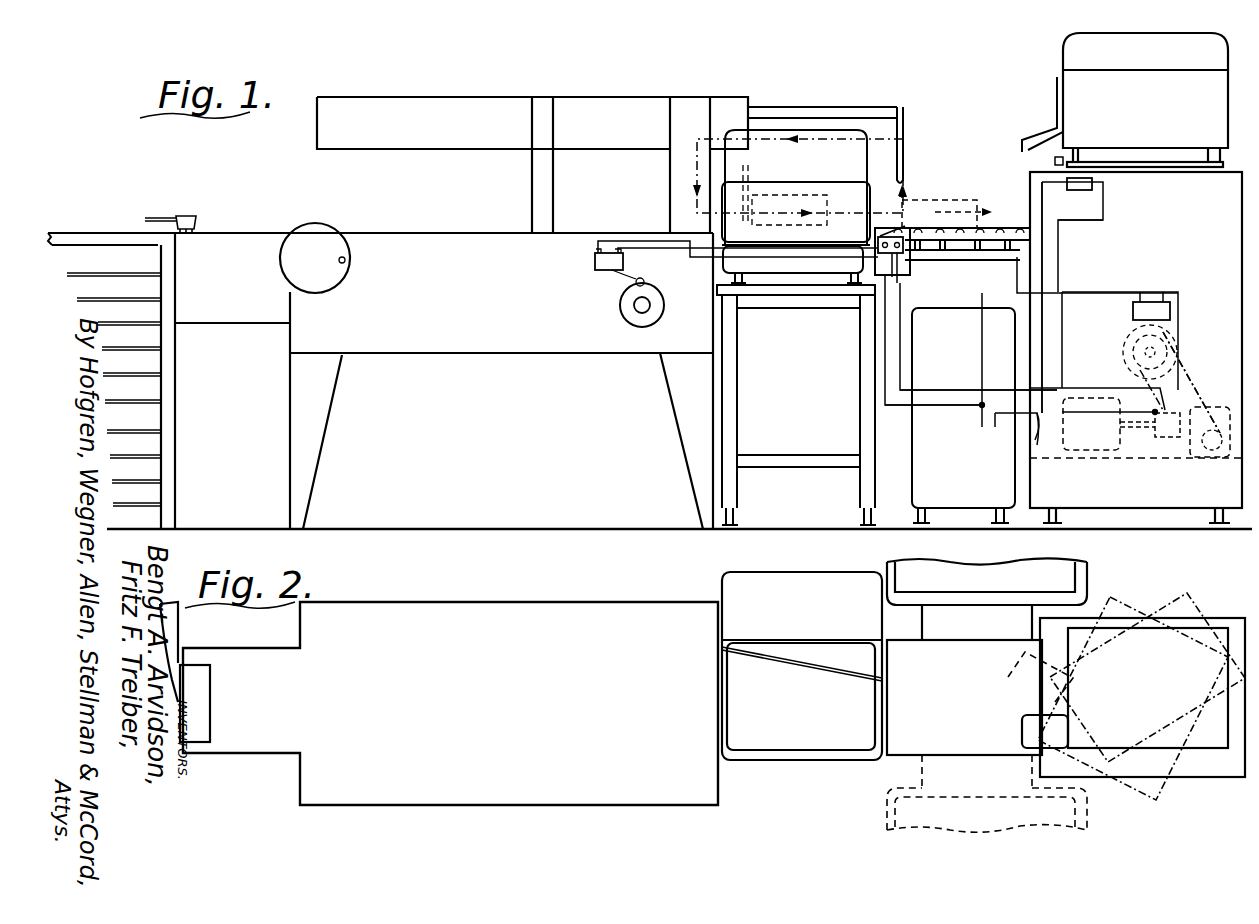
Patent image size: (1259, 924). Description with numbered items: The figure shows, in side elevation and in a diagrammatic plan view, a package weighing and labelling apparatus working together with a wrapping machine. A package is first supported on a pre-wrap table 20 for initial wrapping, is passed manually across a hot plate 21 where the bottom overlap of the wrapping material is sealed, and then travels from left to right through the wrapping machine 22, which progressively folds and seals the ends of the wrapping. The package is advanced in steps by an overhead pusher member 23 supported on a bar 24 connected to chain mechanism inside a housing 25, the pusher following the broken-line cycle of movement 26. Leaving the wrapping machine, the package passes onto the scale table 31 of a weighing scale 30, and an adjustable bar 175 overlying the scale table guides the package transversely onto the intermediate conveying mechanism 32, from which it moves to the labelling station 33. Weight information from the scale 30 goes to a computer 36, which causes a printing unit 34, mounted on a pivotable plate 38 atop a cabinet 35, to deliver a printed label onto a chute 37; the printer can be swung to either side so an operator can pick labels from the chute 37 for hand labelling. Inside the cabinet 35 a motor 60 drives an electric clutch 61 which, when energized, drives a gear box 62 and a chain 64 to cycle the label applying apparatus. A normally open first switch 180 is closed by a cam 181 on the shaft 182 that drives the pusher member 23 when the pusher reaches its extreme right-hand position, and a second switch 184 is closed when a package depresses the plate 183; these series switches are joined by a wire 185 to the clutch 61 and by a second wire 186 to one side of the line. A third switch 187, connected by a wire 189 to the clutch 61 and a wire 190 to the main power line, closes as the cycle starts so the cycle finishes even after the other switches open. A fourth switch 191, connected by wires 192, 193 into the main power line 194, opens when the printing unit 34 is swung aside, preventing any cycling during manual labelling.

In FIG. 1, the pre-wrap table 20 is at (103, 231).
In FIG. 2, the pre-wrap table 20 is at (170, 631).
In FIG. 1, the hot plate 21 is at (192, 214).
In FIG. 2, the hot plate 21 is at (212, 716).
In FIG. 1, the wrapping machine 22 is at (463, 240).
In FIG. 2, the wrapping machine 22 is at (545, 602).
In FIG. 1, the pusher member 23 is at (905, 128).
In FIG. 1, the bar 24 is at (874, 106).
In FIG. 1, the housing 25 is at (640, 100).
In FIG. 1, the cycle of movement 26 is at (697, 167).
In FIG. 1, the weighing scale 30 is at (800, 372).
In FIG. 2, the weighing scale 30 is at (790, 762).
In FIG. 1, the scale table 31 is at (815, 236).
In FIG. 2, the scale table 31 is at (809, 729).
In FIG. 1, the conveying mechanism 32 is at (956, 263).
In FIG. 2, the conveying mechanism 32 is at (941, 711).
In FIG. 1, the labelling station 33 is at (998, 216).
In FIG. 1, the printing unit 34 is at (1172, 138).
In FIG. 2, the printing unit 34 is at (1151, 711).
In FIG. 1, the cabinet 35 is at (1196, 243).
In FIG. 1, the computer 36 is at (908, 500).
In FIG. 1, the chute 37 is at (1033, 115).
In FIG. 2, the chute 37 is at (1030, 730).
In FIG. 1, the plate 38 is at (1054, 160).
In FIG. 1, the motor 60 is at (1088, 452).
In FIG. 1, the electric clutch 61 is at (1160, 440).
In FIG. 1, the gear box 62 is at (1196, 458).
In FIG. 1, the chain 64 is at (1195, 380).
In FIG. 2, the bar 175 is at (787, 663).
In FIG. 1, the first switch 180 is at (597, 265).
In FIG. 1, the cam 181 is at (628, 318).
In FIG. 1, the shaft 182 is at (649, 305).
In FIG. 1, the plate 183 is at (906, 228).
In FIG. 1, the second switch 184 is at (897, 281).
In FIG. 1, the wire 185 is at (937, 389).
In FIG. 1, the second wire 186 is at (940, 406).
In FIG. 1, the third switch 187 is at (1150, 300).
In FIG. 1, the wire 189 is at (1175, 337).
In FIG. 1, the wire 190 is at (1077, 293).
In FIG. 1, the fourth switch 191 is at (1078, 192).
In FIG. 1, the wire 192 is at (1045, 242).
In FIG. 1, the wire 193 is at (1094, 222).
In FIG. 1, the main power line 194 is at (1035, 445).